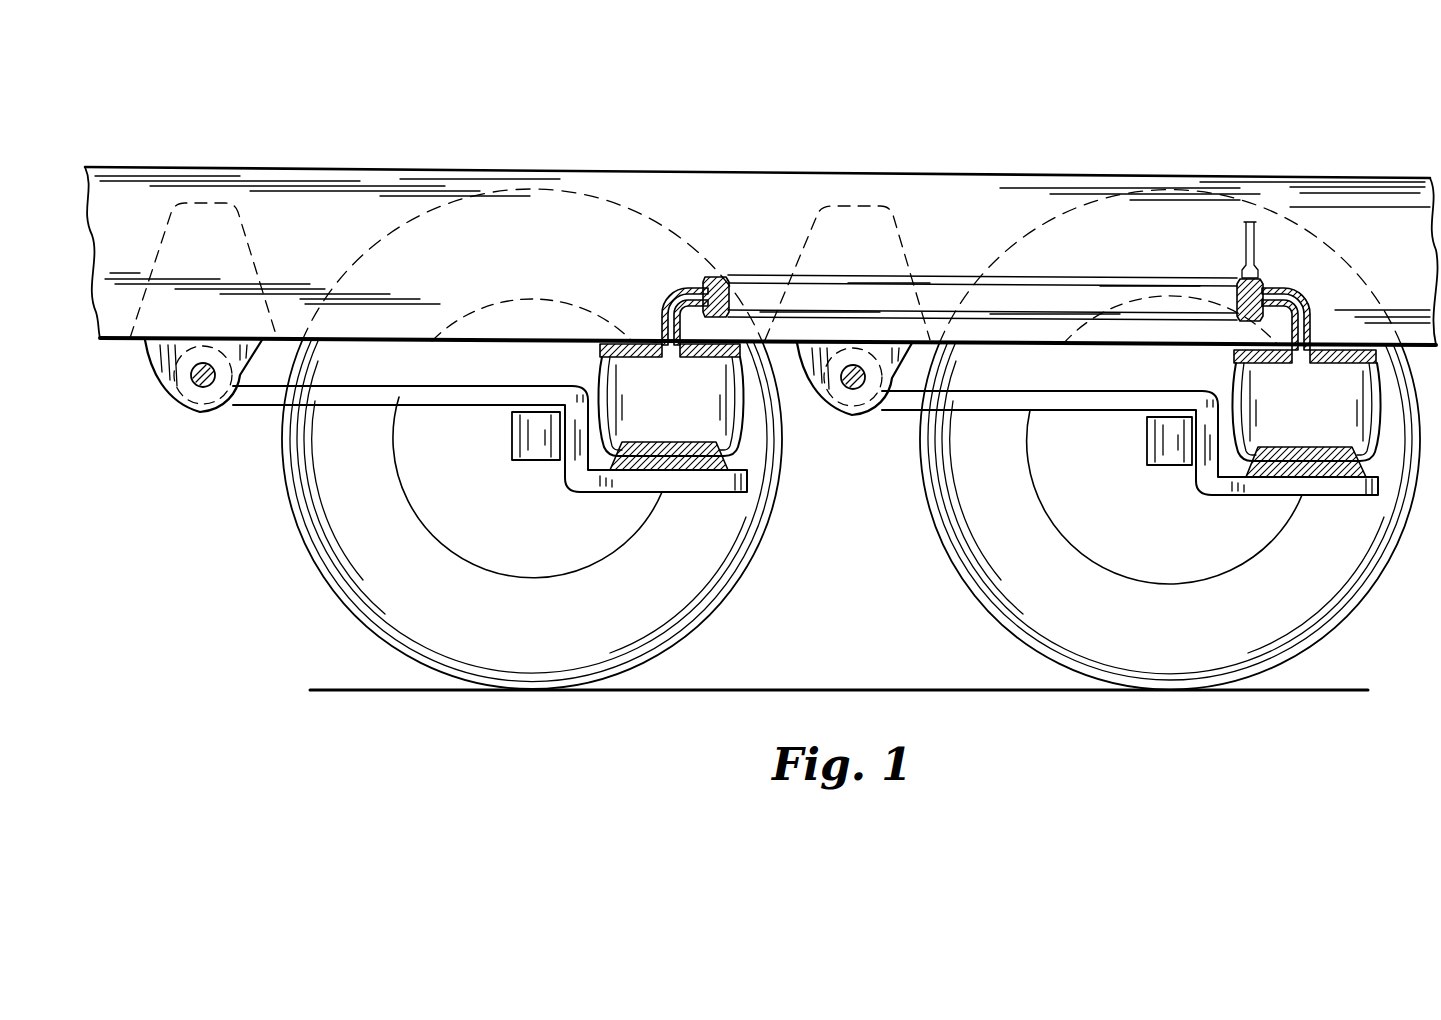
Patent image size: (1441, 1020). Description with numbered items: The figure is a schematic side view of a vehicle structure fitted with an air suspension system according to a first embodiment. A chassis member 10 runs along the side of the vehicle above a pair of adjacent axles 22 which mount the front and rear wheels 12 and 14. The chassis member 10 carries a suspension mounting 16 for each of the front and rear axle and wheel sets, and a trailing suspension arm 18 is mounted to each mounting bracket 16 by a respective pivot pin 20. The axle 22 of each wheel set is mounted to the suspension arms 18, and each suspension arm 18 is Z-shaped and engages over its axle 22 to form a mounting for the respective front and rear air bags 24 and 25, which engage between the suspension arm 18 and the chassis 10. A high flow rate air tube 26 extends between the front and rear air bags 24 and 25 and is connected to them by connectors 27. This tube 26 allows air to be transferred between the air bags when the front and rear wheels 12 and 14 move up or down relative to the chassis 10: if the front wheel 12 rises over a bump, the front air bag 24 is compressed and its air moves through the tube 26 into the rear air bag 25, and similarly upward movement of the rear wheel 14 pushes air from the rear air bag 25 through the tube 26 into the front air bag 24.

The chassis member 10 is at (420, 165).
The front wheel 12 is at (516, 647).
The rear wheel 14 is at (1154, 657).
The suspension mounting 16 is at (152, 358).
The trailing suspension arm 18 is at (347, 396).
The pivot pin 20 is at (204, 388).
The axle 22 is at (535, 451).
The front air bag 24 is at (653, 415).
The rear air bag 25 is at (1286, 422).
The high flow rate air tube 26 is at (866, 290).
The connector 27 is at (680, 288).